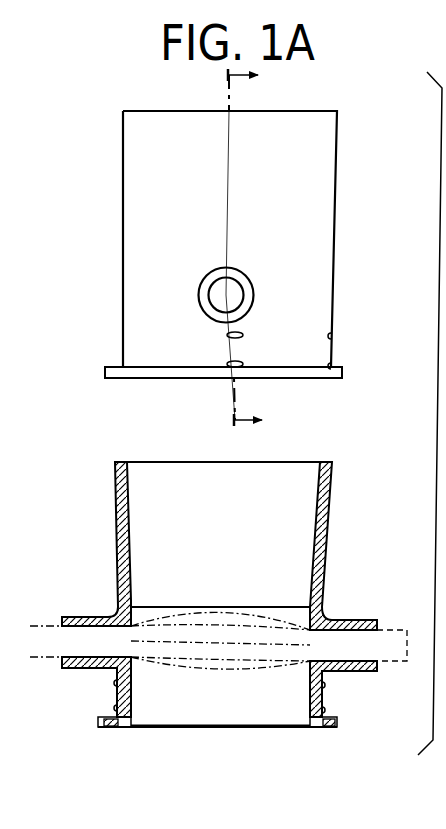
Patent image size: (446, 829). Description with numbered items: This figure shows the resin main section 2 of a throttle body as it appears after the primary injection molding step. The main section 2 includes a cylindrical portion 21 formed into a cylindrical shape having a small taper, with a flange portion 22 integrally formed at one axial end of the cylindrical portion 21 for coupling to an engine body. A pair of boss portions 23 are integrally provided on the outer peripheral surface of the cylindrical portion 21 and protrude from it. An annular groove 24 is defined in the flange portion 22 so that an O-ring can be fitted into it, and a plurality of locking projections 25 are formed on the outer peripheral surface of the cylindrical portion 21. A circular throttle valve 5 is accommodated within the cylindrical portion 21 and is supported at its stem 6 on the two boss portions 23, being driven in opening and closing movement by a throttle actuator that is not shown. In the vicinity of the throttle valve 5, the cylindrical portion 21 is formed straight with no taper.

The main section 2 is at (340, 203).
The cylindrical portion 21 is at (336, 257).
The flange portion 22 is at (343, 376).
The boss portions 23 is at (237, 272).
The annular groove 24 is at (112, 732).
The locking projections 25 is at (114, 709).
The throttle valve 5 is at (197, 666).
The stem 6 is at (383, 663).